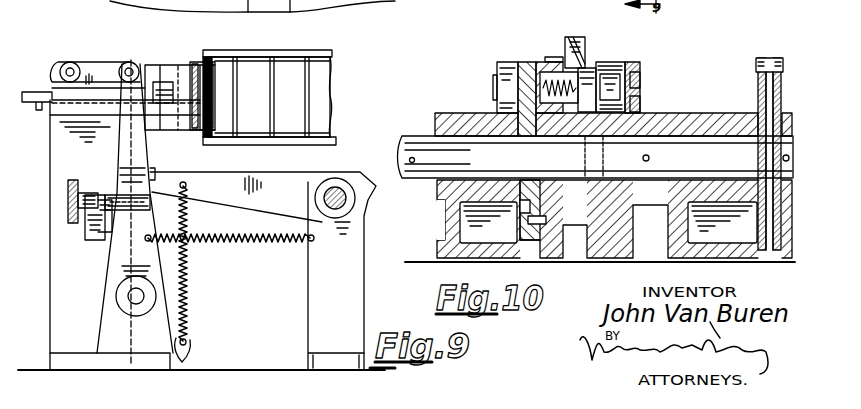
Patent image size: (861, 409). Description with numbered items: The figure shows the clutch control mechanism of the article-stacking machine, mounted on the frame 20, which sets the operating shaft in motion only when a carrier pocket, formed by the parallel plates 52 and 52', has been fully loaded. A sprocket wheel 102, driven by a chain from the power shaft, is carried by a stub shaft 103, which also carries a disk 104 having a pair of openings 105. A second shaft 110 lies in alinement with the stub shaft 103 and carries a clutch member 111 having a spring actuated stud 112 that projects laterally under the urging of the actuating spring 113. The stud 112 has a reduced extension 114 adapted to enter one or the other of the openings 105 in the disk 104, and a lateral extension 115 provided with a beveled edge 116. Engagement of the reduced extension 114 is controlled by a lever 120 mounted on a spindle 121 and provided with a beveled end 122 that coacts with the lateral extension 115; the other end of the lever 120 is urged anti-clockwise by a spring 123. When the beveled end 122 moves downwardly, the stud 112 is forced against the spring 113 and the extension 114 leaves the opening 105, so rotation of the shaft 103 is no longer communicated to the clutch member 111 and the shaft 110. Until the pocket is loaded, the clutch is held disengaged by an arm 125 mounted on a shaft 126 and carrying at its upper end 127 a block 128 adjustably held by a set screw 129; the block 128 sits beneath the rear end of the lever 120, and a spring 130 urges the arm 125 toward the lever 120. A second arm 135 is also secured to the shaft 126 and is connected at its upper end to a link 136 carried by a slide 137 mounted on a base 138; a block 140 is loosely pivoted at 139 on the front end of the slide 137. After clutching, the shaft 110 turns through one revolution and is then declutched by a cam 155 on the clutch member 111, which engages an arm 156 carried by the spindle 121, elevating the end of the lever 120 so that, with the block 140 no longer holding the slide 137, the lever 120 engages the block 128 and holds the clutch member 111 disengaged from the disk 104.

In FIG. 9, the frame 20 is at (223, 371).
In FIG. 10, the frame 20 is at (388, 2).
In FIG. 9, the parallel plate 52 is at (269, 148).
In FIG. 9, the parallel plate 52' is at (267, 81).
In FIG. 10, the sprocket wheel 102 is at (768, 58).
In FIG. 10, the stub shaft 103 is at (705, 136).
In FIG. 10, the disk 104 is at (632, 112).
In FIG. 10, the openings 105 is at (634, 86).
In FIG. 10, the second shaft 110 is at (410, 136).
In FIG. 10, the clutch member 111 is at (526, 62).
In FIG. 10, the spring actuated stud 112 is at (598, 62).
In FIG. 10, the actuating spring 113 is at (548, 64).
In FIG. 10, the reduced extension 114 is at (632, 74).
In FIG. 10, the lateral extension 115 is at (588, 68).
In FIG. 10, the beveled edge 116 is at (600, 74).
In FIG. 9, the lever 120 is at (283, 180).
In FIG. 10, the lever 120 is at (550, 60).
In FIG. 9, the spindle 121 is at (338, 196).
In FIG. 10, the beveled end 122 is at (574, 38).
In FIG. 9, the spring 123 is at (190, 305).
In FIG. 9, the arm 125 is at (116, 258).
In FIG. 9, the shaft 126 is at (128, 296).
In FIG. 9, the upper end 127 is at (108, 240).
In FIG. 9, the block 128 is at (122, 193).
In FIG. 9, the set screw 129 is at (105, 200).
In FIG. 9, the spring 130 is at (232, 242).
In FIG. 9, the arm 135 is at (142, 160).
In FIG. 9, the link 136 is at (86, 72).
In FIG. 9, the slide 137 is at (33, 92).
In FIG. 9, the base 138 is at (55, 108).
In FIG. 9, the pivot 139 is at (166, 82).
In FIG. 9, the block 140 is at (188, 64).
In FIG. 10, the cam 155 is at (512, 88).
In FIG. 10, the arm 156 is at (497, 108).